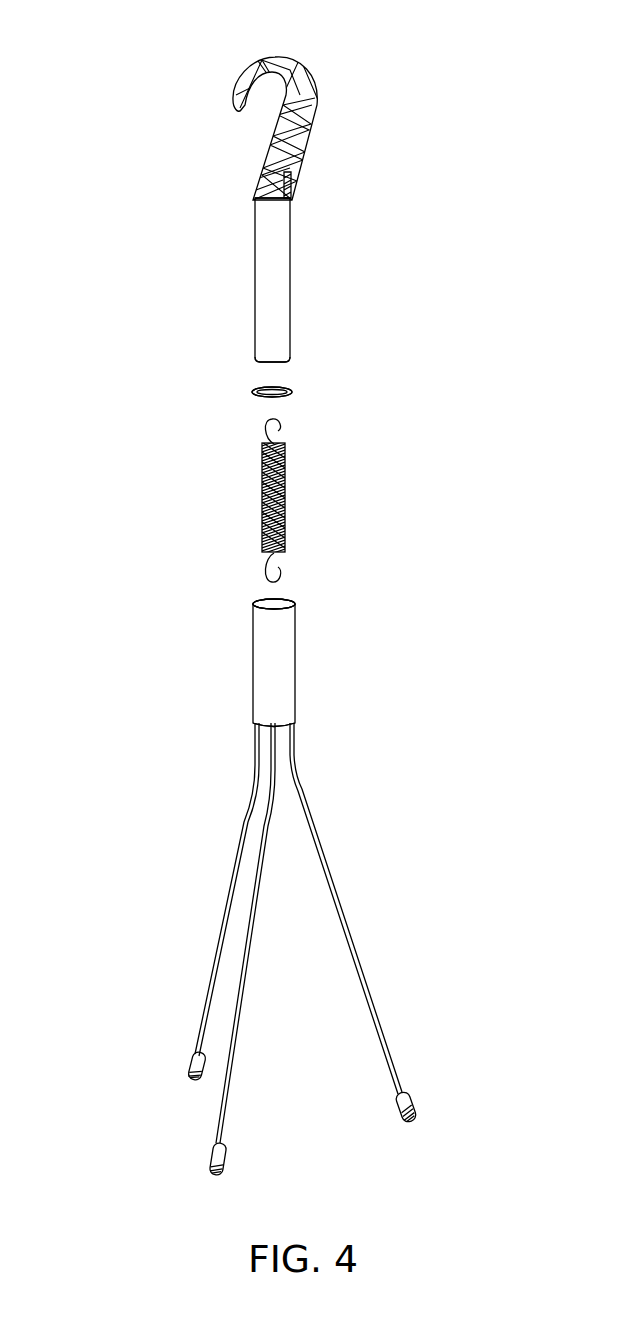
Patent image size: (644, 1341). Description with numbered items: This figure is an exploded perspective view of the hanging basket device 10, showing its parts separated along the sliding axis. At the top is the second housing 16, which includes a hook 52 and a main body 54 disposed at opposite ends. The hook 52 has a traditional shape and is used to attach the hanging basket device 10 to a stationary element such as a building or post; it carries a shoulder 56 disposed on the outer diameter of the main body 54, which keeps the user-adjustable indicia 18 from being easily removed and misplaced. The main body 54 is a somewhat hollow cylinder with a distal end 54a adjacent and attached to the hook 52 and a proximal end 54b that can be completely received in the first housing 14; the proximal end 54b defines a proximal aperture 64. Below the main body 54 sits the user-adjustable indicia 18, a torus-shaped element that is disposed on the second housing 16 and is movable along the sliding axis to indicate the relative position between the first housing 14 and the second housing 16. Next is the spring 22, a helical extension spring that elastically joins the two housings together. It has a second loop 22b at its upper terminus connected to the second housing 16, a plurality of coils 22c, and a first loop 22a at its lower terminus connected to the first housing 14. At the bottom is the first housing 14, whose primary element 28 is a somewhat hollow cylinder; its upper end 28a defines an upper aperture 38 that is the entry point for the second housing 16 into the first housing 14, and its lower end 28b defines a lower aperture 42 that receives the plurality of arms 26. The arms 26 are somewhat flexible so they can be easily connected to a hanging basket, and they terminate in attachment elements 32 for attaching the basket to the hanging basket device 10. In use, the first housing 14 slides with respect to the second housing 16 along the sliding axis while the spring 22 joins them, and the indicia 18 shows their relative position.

The hanging basket device 10 is at (78, 68).
The first housing 14 is at (388, 670).
The second housing 16 is at (163, 165).
The user-adjustable indicia 18 is at (300, 395).
The spring 22 is at (302, 497).
The first loop 22a is at (292, 578).
The second loop 22b is at (290, 422).
The plurality of coils 22c is at (248, 504).
The plurality of arms 26 is at (340, 863).
The primary element 28 is at (278, 670).
The anchor tube upper end 28a is at (238, 617).
The anchor tube lower end 28b is at (305, 712).
The attachment elements 32 is at (180, 1060).
The upper aperture 38 is at (260, 592).
The lower aperture 42 is at (283, 757).
The hook 52 is at (303, 68).
The main body 54 is at (275, 268).
The distal end 54a is at (240, 208).
The proximal end 54b is at (298, 350).
The shoulder 56 is at (302, 195).
The proximal aperture 64 is at (262, 370).